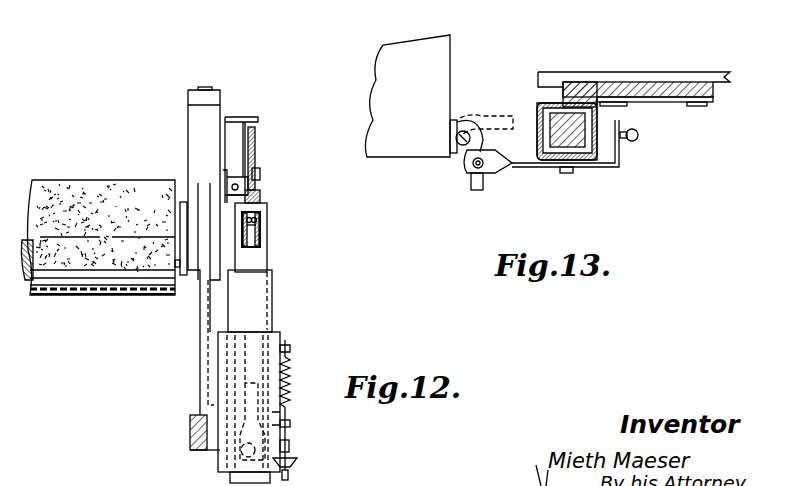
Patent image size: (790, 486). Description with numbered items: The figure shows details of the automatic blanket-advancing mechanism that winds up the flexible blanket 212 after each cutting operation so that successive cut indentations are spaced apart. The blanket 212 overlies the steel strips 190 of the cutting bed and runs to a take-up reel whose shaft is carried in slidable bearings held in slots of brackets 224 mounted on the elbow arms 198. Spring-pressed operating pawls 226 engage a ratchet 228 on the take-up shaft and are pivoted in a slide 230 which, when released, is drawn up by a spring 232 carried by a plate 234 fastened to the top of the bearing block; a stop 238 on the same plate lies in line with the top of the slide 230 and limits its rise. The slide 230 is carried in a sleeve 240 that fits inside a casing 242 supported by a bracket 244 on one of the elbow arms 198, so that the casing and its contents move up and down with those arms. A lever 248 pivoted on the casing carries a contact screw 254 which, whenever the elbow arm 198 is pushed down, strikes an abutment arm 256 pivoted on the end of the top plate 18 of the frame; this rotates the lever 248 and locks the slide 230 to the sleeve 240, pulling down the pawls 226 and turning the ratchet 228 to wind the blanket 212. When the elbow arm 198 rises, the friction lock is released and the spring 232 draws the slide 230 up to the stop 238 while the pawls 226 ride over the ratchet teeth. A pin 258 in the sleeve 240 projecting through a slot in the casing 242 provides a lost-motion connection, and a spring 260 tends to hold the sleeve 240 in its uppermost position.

In FIG. 13, the top plate 18 is at (373, 150).
In FIG. 12, the steel strips 190 is at (100, 294).
In FIG. 12, the elbow arms 198 is at (190, 428).
In FIG. 13, the elbow arms 198 is at (548, 78).
In FIG. 12, the flexible blanket 212 is at (100, 185).
In FIG. 12, the brackets 224 is at (196, 116).
In FIG. 12, the spring-pressed operating pawls 226 is at (256, 227).
In FIG. 12, the ratchet 228 is at (258, 198).
In FIG. 12, the slide 230 is at (256, 262).
In FIG. 13, the slide 230 is at (560, 130).
In FIG. 12, the spring 232 is at (252, 134).
In FIG. 12, the plate 234 is at (235, 143).
In FIG. 12, the stop 238 is at (232, 195).
In FIG. 12, the sleeve 240 is at (272, 299).
In FIG. 13, the sleeve 240 is at (598, 114).
In FIG. 12, the casing 242 is at (281, 338).
In FIG. 13, the casing 242 is at (597, 147).
In FIG. 12, the bracket 244 is at (207, 371).
In FIG. 13, the bracket 244 is at (617, 83).
In FIG. 12, the lever 248 is at (290, 455).
In FIG. 13, the lever 248 is at (527, 167).
In FIG. 13, the contact screw 254 is at (469, 175).
In FIG. 13, the abutment arm 256 is at (476, 191).
In FIG. 12, the pin 258 is at (290, 425).
In FIG. 12, the spring 260 is at (289, 371).